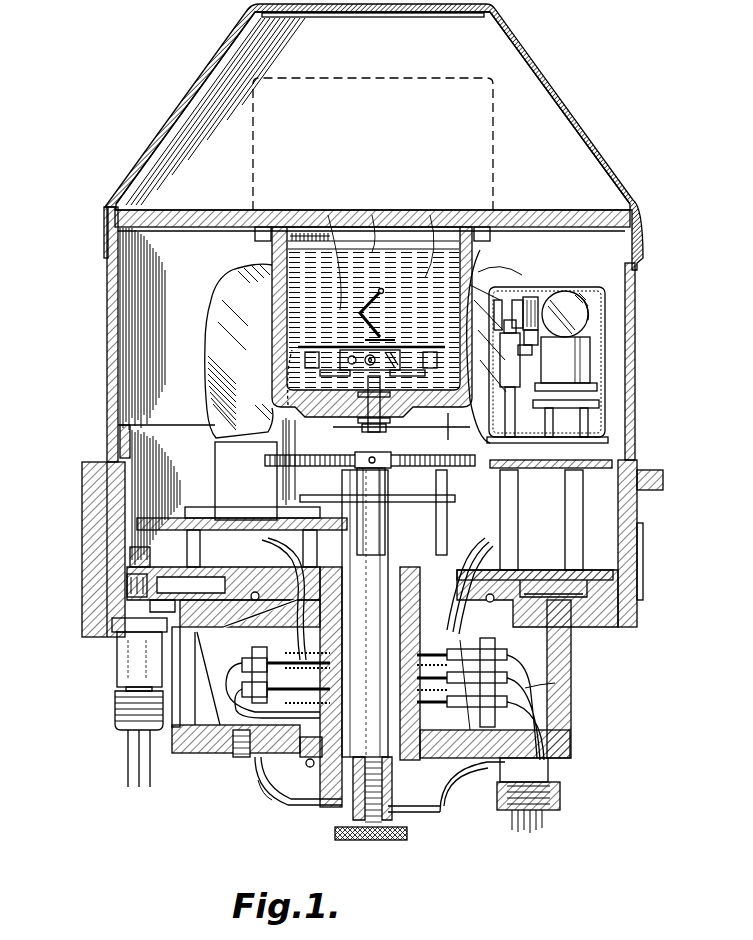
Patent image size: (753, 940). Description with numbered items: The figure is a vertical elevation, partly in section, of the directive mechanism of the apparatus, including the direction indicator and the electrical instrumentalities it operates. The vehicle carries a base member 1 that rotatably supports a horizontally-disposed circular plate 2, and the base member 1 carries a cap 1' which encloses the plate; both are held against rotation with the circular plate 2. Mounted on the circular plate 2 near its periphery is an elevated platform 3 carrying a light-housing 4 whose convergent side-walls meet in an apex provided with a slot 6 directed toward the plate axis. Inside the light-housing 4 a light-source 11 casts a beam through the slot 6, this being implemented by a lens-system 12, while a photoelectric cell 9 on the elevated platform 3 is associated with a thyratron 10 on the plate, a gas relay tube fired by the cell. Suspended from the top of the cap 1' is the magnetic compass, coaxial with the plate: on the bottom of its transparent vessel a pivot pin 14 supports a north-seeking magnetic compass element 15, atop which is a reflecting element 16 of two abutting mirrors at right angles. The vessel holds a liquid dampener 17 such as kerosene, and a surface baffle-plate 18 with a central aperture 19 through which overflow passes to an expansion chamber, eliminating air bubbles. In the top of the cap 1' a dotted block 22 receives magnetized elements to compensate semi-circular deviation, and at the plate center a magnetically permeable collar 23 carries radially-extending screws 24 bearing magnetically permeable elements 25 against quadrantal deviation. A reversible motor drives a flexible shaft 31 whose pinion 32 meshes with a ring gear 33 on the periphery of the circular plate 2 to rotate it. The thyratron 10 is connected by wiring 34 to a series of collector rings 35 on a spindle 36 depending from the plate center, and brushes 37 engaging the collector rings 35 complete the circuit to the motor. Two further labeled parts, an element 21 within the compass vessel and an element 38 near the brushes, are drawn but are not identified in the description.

The base member 1 is at (362, 650).
The cap 1' is at (365, 284).
The circular plate 2 is at (538, 570).
The elevated platform 3 is at (612, 472).
The light-housing 4 is at (608, 357).
The slot 6 is at (528, 297).
The photoelectric cell 9 is at (500, 302).
The thyratron 10 is at (218, 303).
The light-source 11 is at (590, 318).
The lens-system 12 is at (541, 308).
The pivot pin 14 is at (290, 388).
The magnetic compass element 15 is at (312, 340).
The reflecting element 16 is at (327, 214).
The liquid dampener 17 is at (447, 240).
The surface baffle-plate 18 is at (428, 276).
The central aperture 19 is at (370, 214).
The support plate 21 is at (300, 350).
The block 22 is at (250, 183).
The collar 23 is at (358, 450).
The radially-extending screws 24 is at (300, 470).
The magnetically permeable elements 25 is at (292, 442).
The flexible shaft 31 is at (128, 756).
The pinion 32 is at (127, 588).
The ring gear 33 is at (152, 600).
The wiring 34 is at (480, 555).
The collector rings 35 is at (272, 660).
The spindle 36 is at (349, 620).
The brushes 37 is at (222, 748).
The wire 38 is at (262, 768).